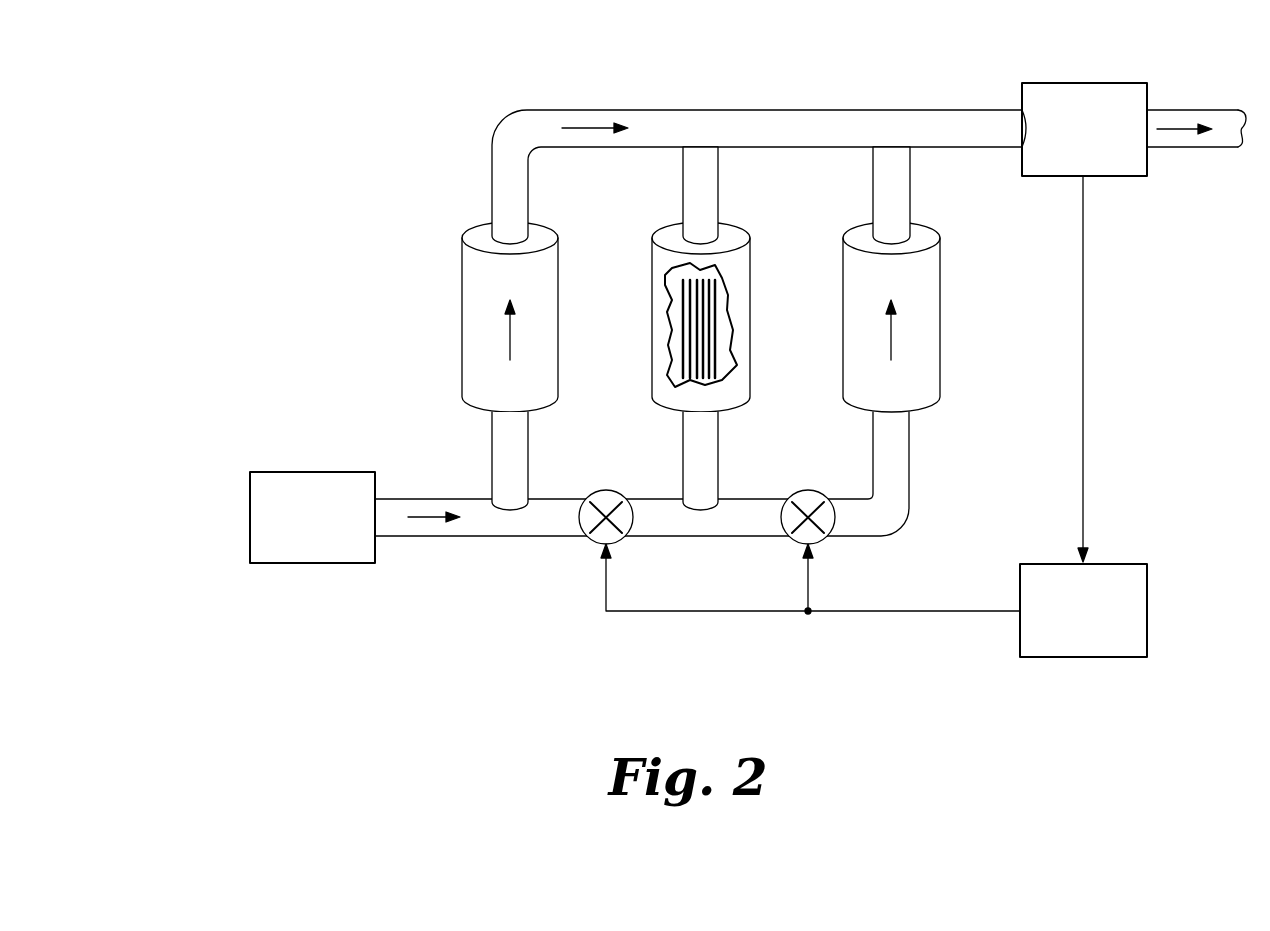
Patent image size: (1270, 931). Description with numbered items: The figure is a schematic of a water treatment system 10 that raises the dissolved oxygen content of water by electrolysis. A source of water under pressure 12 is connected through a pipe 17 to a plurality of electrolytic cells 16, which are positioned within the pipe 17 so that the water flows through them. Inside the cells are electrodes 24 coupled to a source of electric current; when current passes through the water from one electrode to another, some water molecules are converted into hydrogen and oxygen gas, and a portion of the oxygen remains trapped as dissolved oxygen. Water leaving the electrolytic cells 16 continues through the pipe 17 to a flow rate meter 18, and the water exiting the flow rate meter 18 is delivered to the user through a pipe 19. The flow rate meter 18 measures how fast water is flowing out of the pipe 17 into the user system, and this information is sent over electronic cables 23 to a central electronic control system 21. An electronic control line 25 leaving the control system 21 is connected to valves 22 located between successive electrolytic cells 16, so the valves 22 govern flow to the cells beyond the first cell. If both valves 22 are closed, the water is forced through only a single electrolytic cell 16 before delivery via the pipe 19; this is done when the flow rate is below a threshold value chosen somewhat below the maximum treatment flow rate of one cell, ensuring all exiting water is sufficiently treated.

The exhaust treatment system 10 is at (248, 231).
The source of water under pressure 12 is at (322, 472).
The electrolytic cell 16 is at (560, 272).
The pipe 17 is at (825, 110).
The flow rate meter 18 is at (1085, 83).
The pipe 19 is at (1200, 147).
The central electronic control system 21 is at (1080, 657).
The valve 22 is at (582, 520).
The electronic cable 23 is at (1083, 377).
The electrode 24 is at (710, 325).
The electronic control line 25 is at (947, 611).